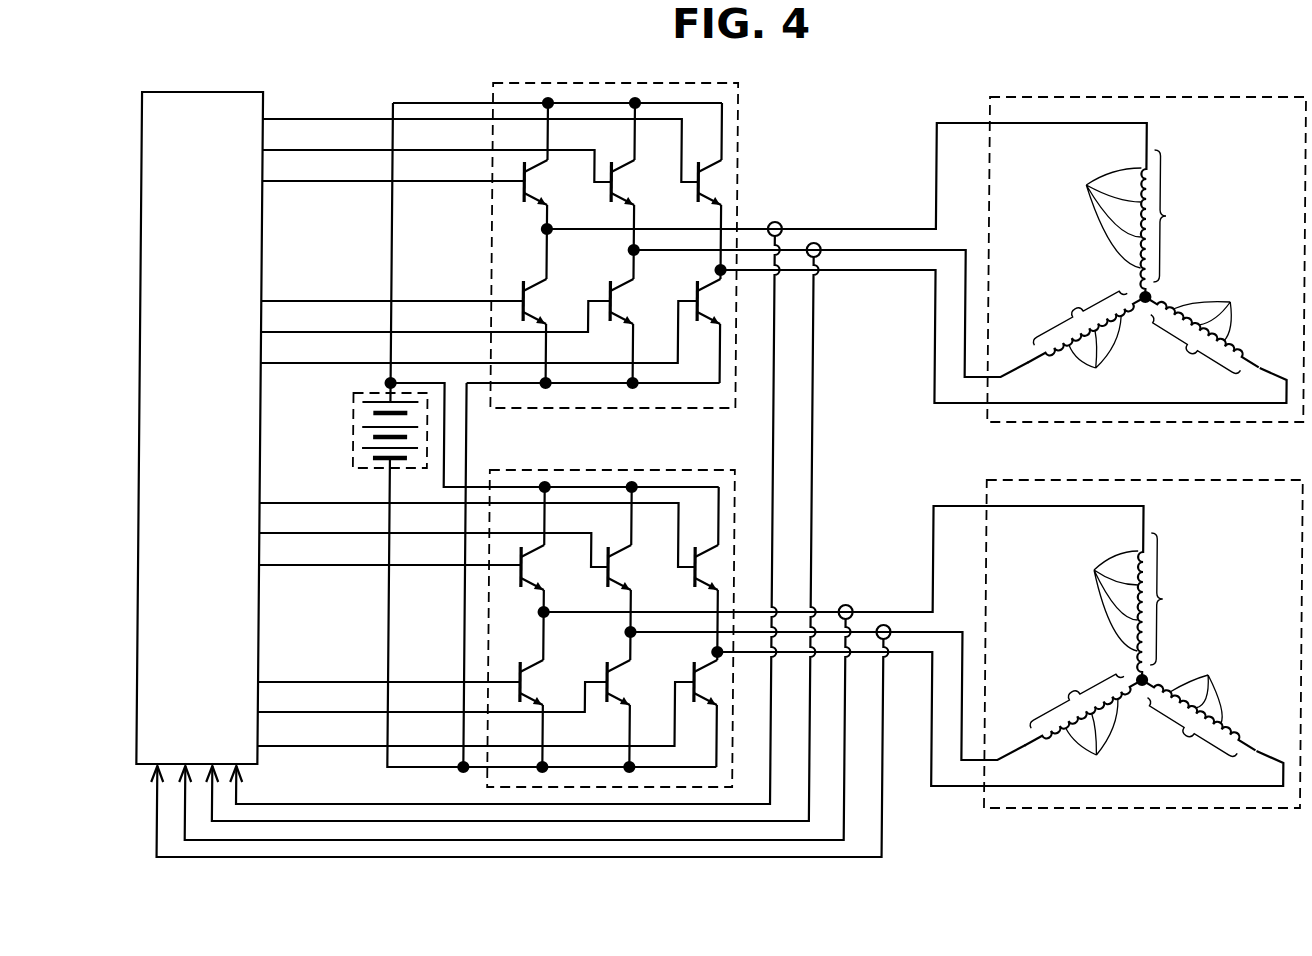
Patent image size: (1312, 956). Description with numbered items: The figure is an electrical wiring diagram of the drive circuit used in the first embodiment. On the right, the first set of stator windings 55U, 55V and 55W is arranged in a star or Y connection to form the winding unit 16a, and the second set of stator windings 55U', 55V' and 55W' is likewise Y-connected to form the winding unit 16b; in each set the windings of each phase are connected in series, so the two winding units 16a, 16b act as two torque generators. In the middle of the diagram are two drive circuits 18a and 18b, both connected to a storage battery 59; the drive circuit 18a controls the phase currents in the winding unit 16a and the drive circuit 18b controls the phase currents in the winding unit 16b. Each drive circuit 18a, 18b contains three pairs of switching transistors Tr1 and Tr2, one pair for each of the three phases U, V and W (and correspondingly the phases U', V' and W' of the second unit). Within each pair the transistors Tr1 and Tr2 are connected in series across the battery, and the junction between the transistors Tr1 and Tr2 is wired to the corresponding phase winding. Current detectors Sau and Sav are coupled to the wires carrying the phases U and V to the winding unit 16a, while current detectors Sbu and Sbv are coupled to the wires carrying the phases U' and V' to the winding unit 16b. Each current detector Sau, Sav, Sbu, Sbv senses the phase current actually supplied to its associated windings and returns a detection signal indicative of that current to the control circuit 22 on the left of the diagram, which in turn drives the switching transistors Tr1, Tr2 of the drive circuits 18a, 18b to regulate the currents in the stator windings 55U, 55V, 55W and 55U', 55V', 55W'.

The control circuit 22 is at (152, 340).
The drive circuit 18a is at (553, 82).
The drive circuit 18b is at (550, 470).
The storage battery 59 is at (353, 432).
The winding unit 16a is at (1186, 96).
The winding unit 16b is at (1190, 481).
The switching transistor Tr1 is at (554, 375).
The switching transistor Tr2 is at (554, 492).
The current detector Sau is at (776, 221).
The current detector Sav is at (820, 243).
The current detector Sbu is at (846, 605).
The current detector Sbv is at (885, 625).
The phase U is at (1165, 223).
The phase V is at (1088, 325).
The phase W is at (1203, 338).
The phase U' is at (1164, 606).
The phase V' is at (1085, 708).
The phase W' is at (1200, 721).
The stator winding 55U is at (1086, 218).
The stator winding 55V is at (1101, 358).
The stator winding 55W is at (1224, 307).
The stator winding 55U' is at (1086, 601).
The stator winding 55V' is at (1101, 743).
The stator winding 55W' is at (1216, 688).